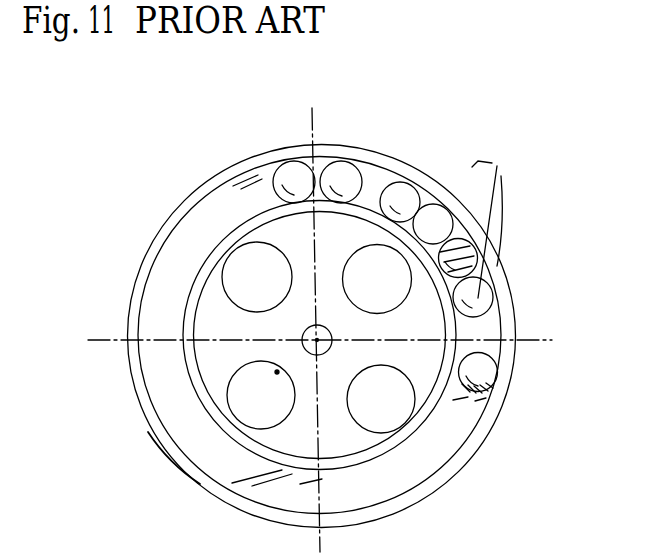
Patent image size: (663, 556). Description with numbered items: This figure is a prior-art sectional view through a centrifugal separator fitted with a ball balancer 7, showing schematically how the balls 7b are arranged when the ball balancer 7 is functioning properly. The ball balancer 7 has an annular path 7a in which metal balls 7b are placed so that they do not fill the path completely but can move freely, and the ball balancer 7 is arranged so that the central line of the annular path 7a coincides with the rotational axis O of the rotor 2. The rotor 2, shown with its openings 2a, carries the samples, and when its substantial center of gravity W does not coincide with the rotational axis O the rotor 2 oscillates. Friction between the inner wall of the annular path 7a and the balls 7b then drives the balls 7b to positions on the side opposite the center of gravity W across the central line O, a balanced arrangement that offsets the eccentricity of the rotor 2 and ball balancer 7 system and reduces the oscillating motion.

The ball balancer 7 is at (167, 207).
The annular path 7a is at (162, 311).
The balls 7b is at (398, 195).
The rotor 2 is at (221, 393).
The holes 2a is at (360, 249).
The rotational axis O is at (320, 333).
The substantial center of gravity W is at (289, 385).